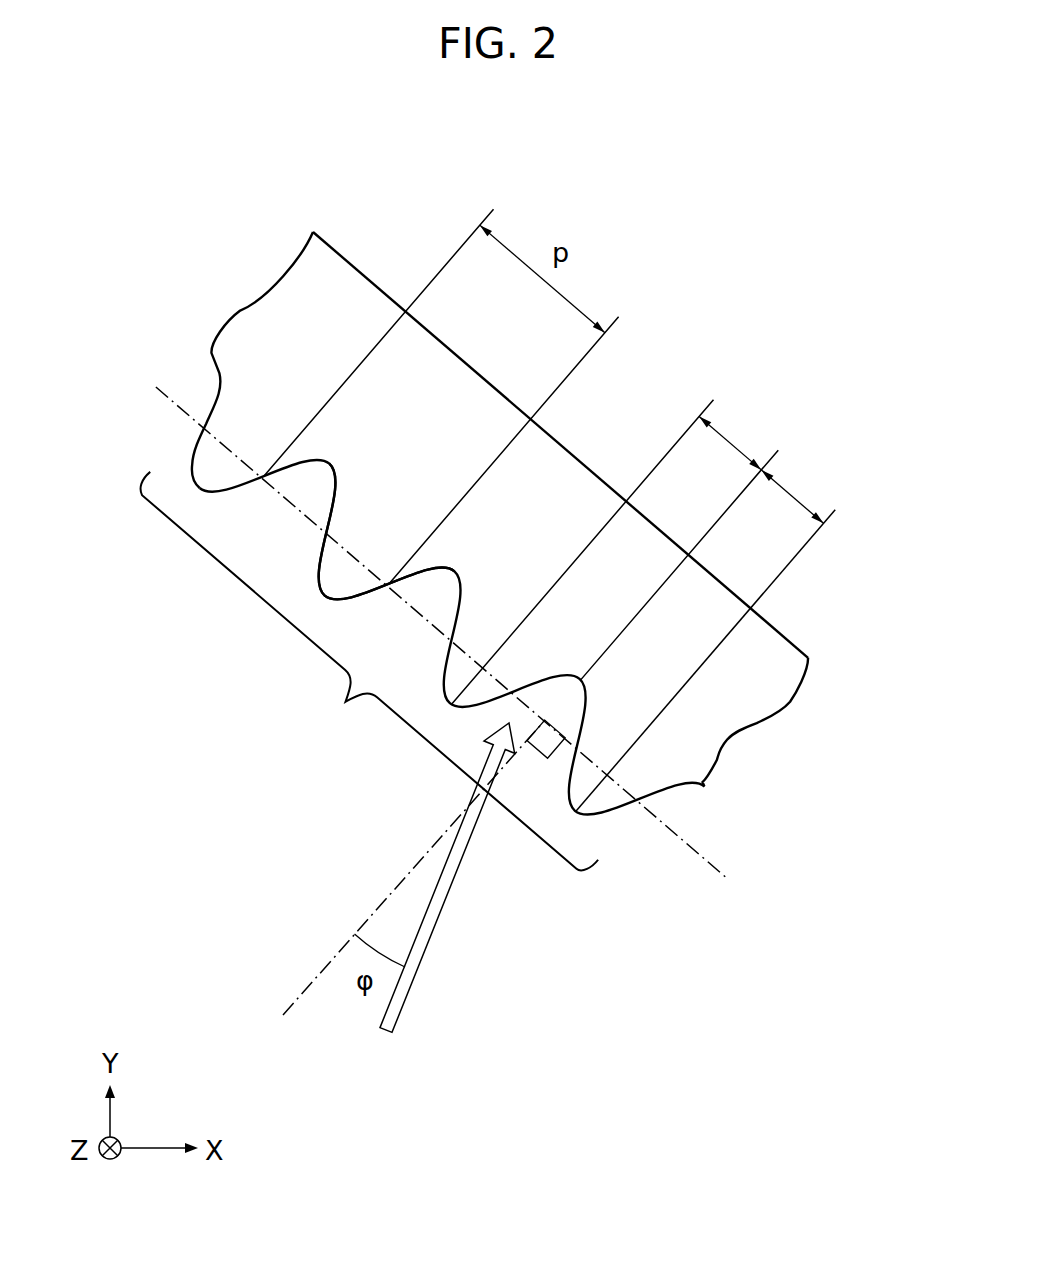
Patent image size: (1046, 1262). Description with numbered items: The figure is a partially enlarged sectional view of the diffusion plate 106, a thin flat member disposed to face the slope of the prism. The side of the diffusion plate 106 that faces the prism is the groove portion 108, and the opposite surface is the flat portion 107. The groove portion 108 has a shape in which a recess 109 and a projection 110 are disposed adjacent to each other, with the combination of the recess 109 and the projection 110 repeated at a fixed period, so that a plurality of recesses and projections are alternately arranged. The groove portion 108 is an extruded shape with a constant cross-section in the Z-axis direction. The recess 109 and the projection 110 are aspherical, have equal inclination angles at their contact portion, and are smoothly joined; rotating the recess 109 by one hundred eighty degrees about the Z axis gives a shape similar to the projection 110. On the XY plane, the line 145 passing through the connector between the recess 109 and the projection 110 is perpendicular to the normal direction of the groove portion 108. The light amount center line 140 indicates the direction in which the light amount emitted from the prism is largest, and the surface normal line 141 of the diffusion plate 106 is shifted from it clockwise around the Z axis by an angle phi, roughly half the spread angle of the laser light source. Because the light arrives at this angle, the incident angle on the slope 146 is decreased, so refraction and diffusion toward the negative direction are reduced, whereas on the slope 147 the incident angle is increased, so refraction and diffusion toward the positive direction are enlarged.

The diffusion plate 106 is at (238, 293).
The flat portion 107 is at (785, 638).
The groove portion 108 is at (359, 683).
The recess 109 is at (267, 474).
The projection 110 is at (328, 604).
The light amount center line 140 is at (440, 926).
The surface normal line 141 is at (320, 970).
The line 145 is at (687, 846).
The slope 146 is at (731, 437).
The slope 147 is at (794, 492).